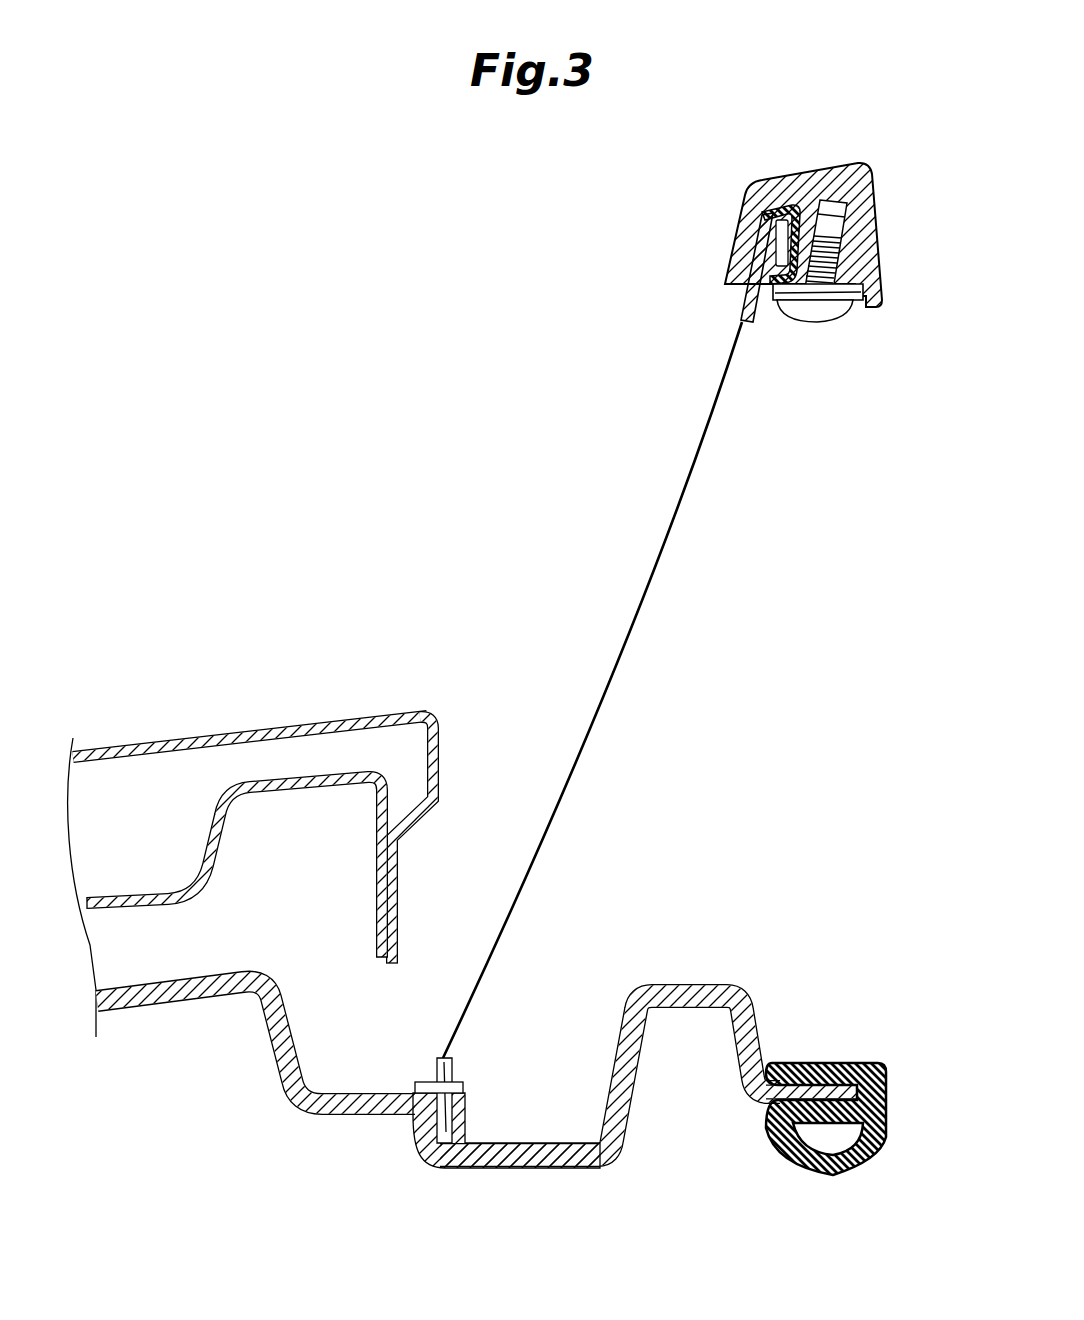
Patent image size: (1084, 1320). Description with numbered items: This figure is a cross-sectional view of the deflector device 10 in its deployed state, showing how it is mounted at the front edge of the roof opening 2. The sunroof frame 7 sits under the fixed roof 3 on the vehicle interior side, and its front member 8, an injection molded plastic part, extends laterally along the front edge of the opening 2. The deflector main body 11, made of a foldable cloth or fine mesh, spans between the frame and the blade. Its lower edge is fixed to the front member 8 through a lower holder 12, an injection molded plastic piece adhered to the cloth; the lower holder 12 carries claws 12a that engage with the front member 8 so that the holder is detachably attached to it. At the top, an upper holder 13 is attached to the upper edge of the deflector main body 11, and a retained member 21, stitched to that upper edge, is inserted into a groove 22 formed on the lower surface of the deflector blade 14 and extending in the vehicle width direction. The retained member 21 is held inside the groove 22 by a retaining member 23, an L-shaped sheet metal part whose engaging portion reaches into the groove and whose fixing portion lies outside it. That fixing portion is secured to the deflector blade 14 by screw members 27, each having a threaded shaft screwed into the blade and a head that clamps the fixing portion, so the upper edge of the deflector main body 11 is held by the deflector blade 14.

The opening 2 is at (440, 752).
The fixed roof 3 is at (208, 736).
The sunroof frame 7 is at (545, 1176).
The front member 8 is at (280, 1060).
The deflector device 10 is at (505, 224).
The deflector main body 11 is at (672, 508).
The lower holder 12 is at (412, 1125).
The claws 12a is at (465, 1107).
The upper holder 13 is at (816, 165).
The deflector blade 14 is at (882, 213).
The retained member 21 is at (738, 300).
The groove 22 is at (753, 253).
The retaining member 23 is at (777, 285).
The screw member 27 is at (818, 323).